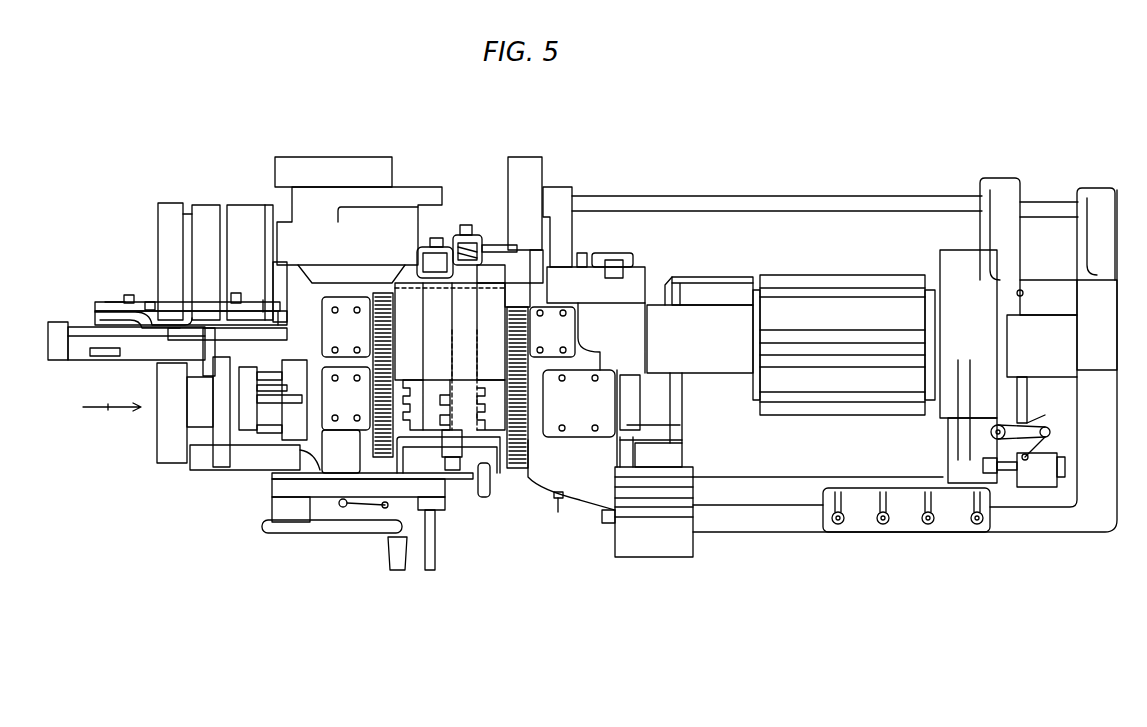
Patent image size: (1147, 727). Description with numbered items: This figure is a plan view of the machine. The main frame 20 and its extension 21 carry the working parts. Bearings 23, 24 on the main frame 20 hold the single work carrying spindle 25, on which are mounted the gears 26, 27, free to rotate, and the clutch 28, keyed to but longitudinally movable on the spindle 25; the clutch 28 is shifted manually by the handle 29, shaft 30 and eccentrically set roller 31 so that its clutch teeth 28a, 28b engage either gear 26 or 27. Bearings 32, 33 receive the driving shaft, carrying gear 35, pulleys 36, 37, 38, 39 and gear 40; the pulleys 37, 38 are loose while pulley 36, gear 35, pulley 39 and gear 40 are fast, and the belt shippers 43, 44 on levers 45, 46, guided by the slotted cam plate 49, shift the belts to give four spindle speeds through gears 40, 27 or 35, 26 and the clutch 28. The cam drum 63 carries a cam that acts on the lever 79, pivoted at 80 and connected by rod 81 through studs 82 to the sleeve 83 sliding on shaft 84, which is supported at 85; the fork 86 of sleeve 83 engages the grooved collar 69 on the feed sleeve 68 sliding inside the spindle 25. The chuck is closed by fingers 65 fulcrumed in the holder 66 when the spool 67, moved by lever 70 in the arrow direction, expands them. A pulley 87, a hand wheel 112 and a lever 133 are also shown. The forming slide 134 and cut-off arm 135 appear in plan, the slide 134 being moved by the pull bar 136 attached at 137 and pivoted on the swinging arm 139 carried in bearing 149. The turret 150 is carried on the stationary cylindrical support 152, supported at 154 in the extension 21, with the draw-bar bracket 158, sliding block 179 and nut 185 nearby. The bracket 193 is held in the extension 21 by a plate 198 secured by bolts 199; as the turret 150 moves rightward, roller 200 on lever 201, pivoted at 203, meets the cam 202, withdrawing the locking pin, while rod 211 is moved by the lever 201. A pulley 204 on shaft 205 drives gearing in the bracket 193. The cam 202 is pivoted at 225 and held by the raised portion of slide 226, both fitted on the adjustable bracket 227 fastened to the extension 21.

The main frame 20 is at (584, 440).
The extension 21 is at (1083, 412).
The bearing 23 is at (579, 403).
The bearing 24 is at (346, 398).
The work carrying spindle 25 is at (477, 407).
The gear 26 is at (510, 470).
The gear 27 is at (370, 445).
The clutch 28 is at (436, 405).
The clutch teeth 28a is at (487, 383).
The clutch teeth 28b is at (415, 383).
The handle 29 is at (482, 497).
The shaft 30 is at (442, 452).
The eccentrically set roller 31 is at (462, 459).
The bearing 32 is at (552, 332).
The bearing 33 is at (346, 327).
The gear 35 is at (513, 307).
The pulley 36 is at (487, 356).
The pulley 37 is at (461, 356).
The pulley 38 is at (433, 331).
The pulley 39 is at (450, 331).
The gear 40 is at (370, 295).
The belt shipper 43 is at (427, 247).
The belt shipper 44 is at (475, 240).
The lever 45 is at (440, 240).
The lever 46 is at (468, 223).
The cam plate 49 is at (512, 249).
The cam drum 63 is at (215, 261).
The fingers 65 is at (279, 398).
The holder 66 is at (294, 400).
The spool 67 is at (248, 398).
The sleeve 68 is at (222, 407).
The grooved collar 69 is at (195, 412).
The lever 70 is at (238, 433).
The lever 79 is at (120, 320).
The pivot 80 is at (115, 302).
The rod 81 is at (205, 335).
The studs 82 is at (140, 300).
The sleeve 83 is at (191, 328).
The shaft 84 is at (136, 343).
The support 85 is at (62, 330).
The fork 86 is at (207, 373).
The pulley 87 is at (358, 220).
The hand wheel 112 is at (380, 530).
The lever 133 is at (436, 530).
The forming slide 134 is at (623, 465).
The cut-off arm 135 is at (596, 320).
The pull bar 136 is at (661, 442).
The attachment point 137 is at (602, 518).
The swinging arm 139 is at (603, 262).
The bearing 149 is at (562, 280).
The turret 150 is at (844, 345).
The cylindrical support 152 is at (862, 327).
The support 154 is at (1097, 279).
The draw-bar bracket 158 is at (290, 312).
The sliding block 179 is at (262, 310).
The nut 185 is at (234, 293).
The bracket 193 is at (980, 330).
The plate 198 is at (905, 505).
The bolts 199 is at (975, 512).
The roller 200 is at (1047, 430).
The lever 201 is at (1022, 426).
The cam 202 is at (1030, 455).
The pivot 203 is at (1022, 420).
The pulley 204 is at (525, 220).
The shaft 205 is at (605, 205).
The rod 211 is at (1027, 386).
The pivot 225 is at (1040, 458).
The slide 226 is at (1065, 466).
The adjustable bracket 227 is at (1037, 471).